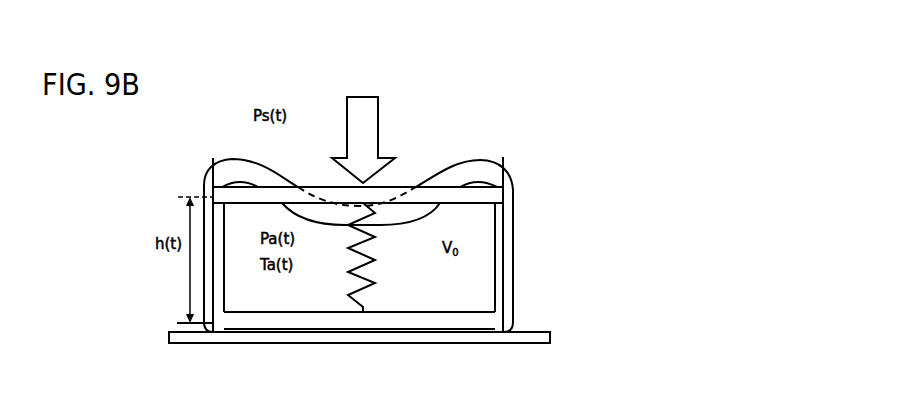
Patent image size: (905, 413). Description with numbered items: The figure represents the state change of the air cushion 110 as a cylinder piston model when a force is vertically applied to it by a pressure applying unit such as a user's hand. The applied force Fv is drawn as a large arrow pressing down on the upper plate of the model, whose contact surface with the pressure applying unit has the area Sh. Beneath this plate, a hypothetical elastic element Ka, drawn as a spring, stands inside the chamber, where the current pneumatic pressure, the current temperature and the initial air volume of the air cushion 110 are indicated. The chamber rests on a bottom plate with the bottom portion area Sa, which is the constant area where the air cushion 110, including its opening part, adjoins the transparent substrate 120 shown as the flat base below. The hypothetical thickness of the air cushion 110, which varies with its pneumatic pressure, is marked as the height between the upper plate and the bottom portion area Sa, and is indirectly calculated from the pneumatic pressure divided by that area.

The air cushion 110 is at (463, 173).
The transparent substrate 120 is at (530, 338).
The hypothetical elastic element Ka is at (373, 257).
The bottom portion area Sa is at (359, 321).
The area of the contact surface Sh is at (358, 196).
The force Fv is at (363, 125).